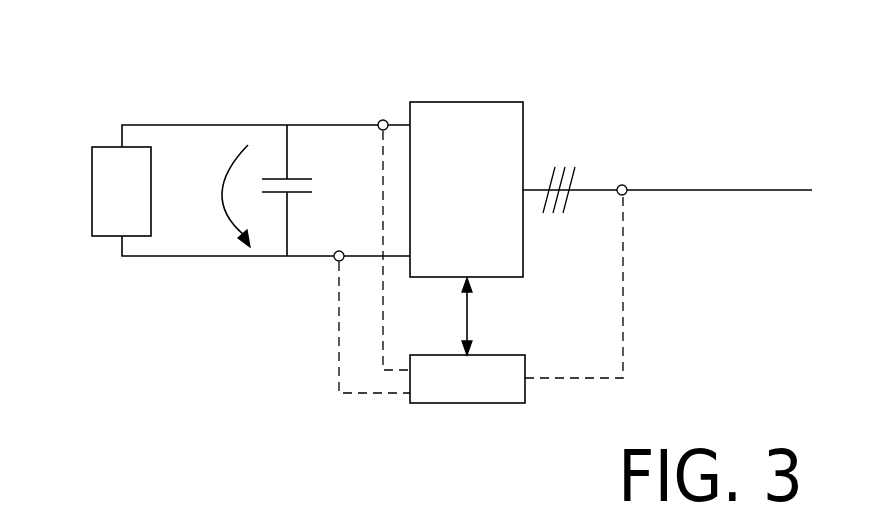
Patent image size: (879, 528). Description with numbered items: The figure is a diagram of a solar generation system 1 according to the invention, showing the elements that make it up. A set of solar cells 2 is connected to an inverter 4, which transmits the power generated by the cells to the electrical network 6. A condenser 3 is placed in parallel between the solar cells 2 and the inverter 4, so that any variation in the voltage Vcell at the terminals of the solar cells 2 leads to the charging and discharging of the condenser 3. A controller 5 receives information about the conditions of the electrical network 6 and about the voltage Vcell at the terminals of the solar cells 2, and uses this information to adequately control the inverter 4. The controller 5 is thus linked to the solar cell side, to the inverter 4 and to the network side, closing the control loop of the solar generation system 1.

The solar generation system 1 is at (176, 372).
The set of solar cells 2 is at (116, 173).
The condenser 3 is at (297, 177).
The inverter 4 is at (468, 127).
The controller 5 is at (448, 382).
The electrical network 6 is at (667, 179).